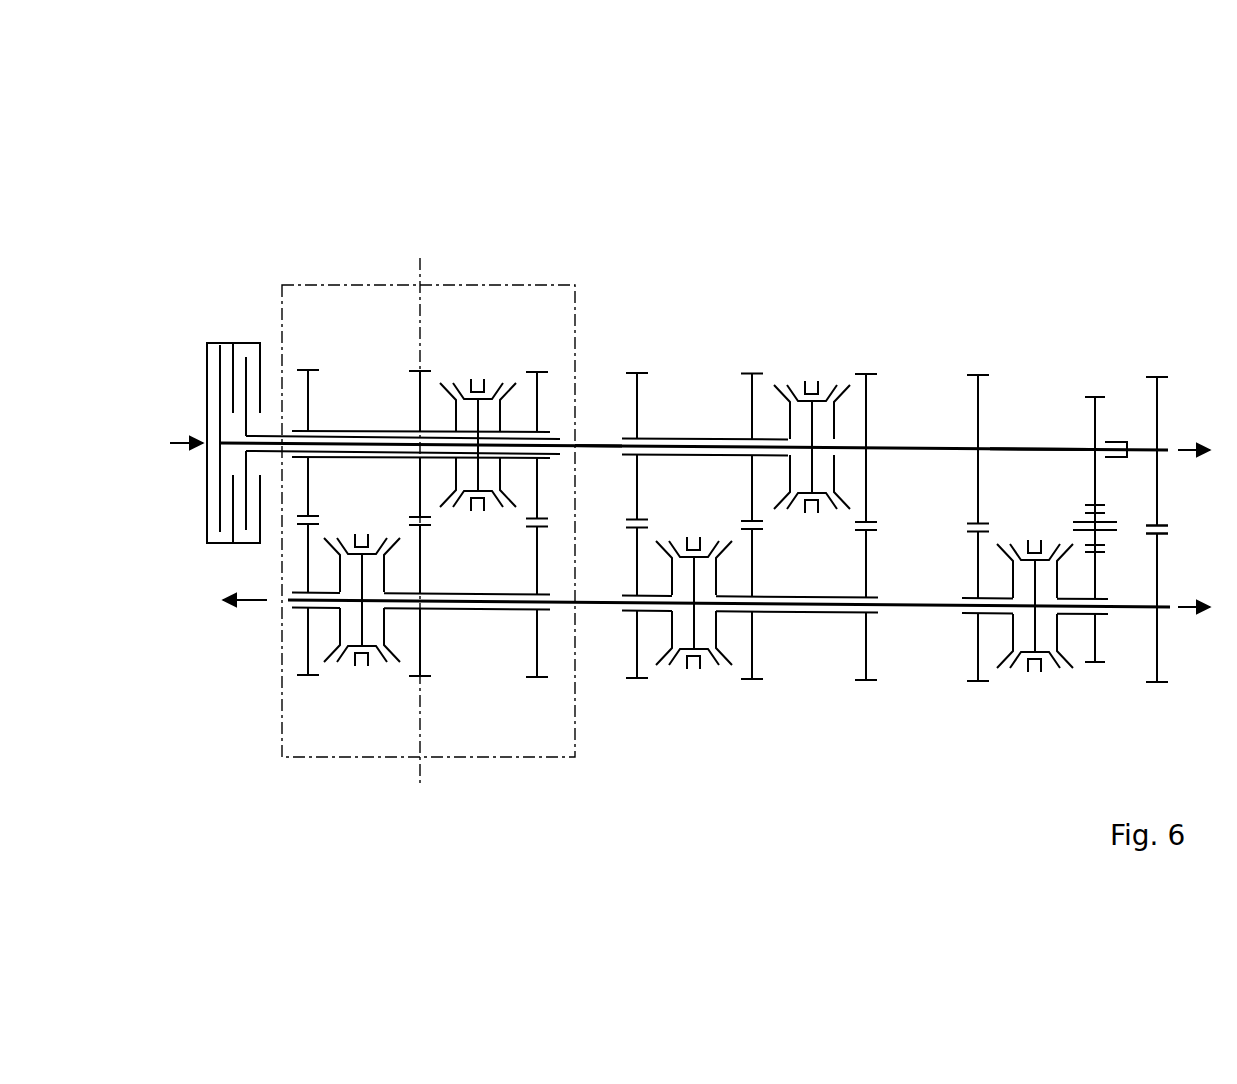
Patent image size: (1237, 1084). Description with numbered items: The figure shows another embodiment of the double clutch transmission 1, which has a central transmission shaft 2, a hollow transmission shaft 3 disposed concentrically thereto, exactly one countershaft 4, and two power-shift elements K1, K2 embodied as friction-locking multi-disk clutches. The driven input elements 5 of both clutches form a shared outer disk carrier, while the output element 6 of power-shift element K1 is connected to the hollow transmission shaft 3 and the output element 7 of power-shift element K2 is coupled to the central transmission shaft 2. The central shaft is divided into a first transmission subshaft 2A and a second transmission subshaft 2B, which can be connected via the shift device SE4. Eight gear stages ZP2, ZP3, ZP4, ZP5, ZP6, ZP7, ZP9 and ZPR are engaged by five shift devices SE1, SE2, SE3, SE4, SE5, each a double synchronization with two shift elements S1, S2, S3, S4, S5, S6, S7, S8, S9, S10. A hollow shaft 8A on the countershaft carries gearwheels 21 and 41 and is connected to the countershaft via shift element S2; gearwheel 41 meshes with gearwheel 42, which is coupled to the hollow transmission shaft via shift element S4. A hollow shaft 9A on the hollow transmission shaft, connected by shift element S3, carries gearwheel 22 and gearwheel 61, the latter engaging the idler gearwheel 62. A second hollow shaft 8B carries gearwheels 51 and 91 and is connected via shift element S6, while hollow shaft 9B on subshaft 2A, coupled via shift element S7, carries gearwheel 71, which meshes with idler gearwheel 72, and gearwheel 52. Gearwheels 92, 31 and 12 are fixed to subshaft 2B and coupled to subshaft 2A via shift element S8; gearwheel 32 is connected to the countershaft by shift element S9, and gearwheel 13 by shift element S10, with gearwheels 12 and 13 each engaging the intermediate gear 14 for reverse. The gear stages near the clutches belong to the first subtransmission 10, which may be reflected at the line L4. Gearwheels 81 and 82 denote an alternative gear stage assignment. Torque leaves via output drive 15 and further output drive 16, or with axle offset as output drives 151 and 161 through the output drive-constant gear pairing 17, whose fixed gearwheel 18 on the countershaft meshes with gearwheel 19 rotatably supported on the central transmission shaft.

The double clutch transmission 1 is at (213, 301).
The central transmission shaft 2 is at (903, 442).
The first transmission subshaft 2A is at (598, 440).
The second transmission subshaft 2B is at (1030, 448).
The hollow transmission shaft 3 is at (344, 432).
The countershaft 4 is at (922, 610).
The input elements 5 is at (223, 342).
The output element 6 is at (247, 360).
The output element 7 is at (214, 377).
The hollow shaft 8A is at (480, 611).
The second hollow shaft 8B is at (815, 614).
The hollow shaft 9A is at (370, 433).
The hollow shaft 9B is at (683, 438).
The first subtransmission 10 is at (552, 285).
The gearwheel 12 is at (1087, 395).
The gearwheel 13 is at (1097, 637).
The intermediate gear 14 is at (1085, 512).
The output drive 15 is at (1184, 612).
The further output drive 16 is at (250, 606).
The output drive-constant gear pairing 17 is at (1172, 535).
The gearwheel 18 is at (1159, 665).
The gearwheel 19 is at (1155, 430).
The gearwheel 21 is at (439, 636).
The gearwheel 22 is at (420, 418).
The gearwheel 31 is at (980, 434).
The gearwheel 32 is at (976, 570).
The gearwheel 41 is at (534, 658).
The gearwheel 42 is at (544, 392).
The gearwheel 51 is at (755, 663).
The gearwheel 52 is at (749, 370).
The gearwheel 61 is at (309, 418).
The gearwheel 62 is at (303, 657).
The gearwheel 71 is at (643, 398).
The gearwheel 72 is at (634, 566).
The gear of gear pair 81 is at (537, 644).
The gear of gear pair 82 is at (537, 402).
The gearwheel 91 is at (868, 556).
The gearwheel 92 is at (867, 434).
The output drive 151 is at (1186, 441).
The output drive 161 is at (1186, 441).
The power-shift element K1 is at (246, 548).
The power-shift element K2 is at (213, 548).
The line L4 is at (418, 268).
The shift element S1 is at (336, 667).
The shift element S2 is at (389, 668).
The shift element S3 is at (443, 384).
The shift element S4 is at (511, 384).
The shift element S5 is at (668, 667).
The shift element S6 is at (723, 668).
The shift element S7 is at (775, 384).
The shift element S8 is at (846, 385).
The shift element S9 is at (1010, 670).
The shift element S10 is at (1062, 670).
The shift device SE1 is at (360, 669).
The shift device SE2 is at (485, 403).
The shift device SE3 is at (696, 656).
The shift device SE4 is at (820, 404).
The shift device SE5 is at (1035, 660).
The gear stage ZP2 is at (459, 482).
The gear stage ZP3 is at (968, 466).
The gear stage ZP4 is at (584, 488).
The gear stage ZP5 is at (750, 509).
The gear stage ZP6 is at (288, 482).
The gear stage ZP7 is at (640, 488).
The gear stage ZP9 is at (891, 466).
The gear stage ZPR is at (1075, 495).